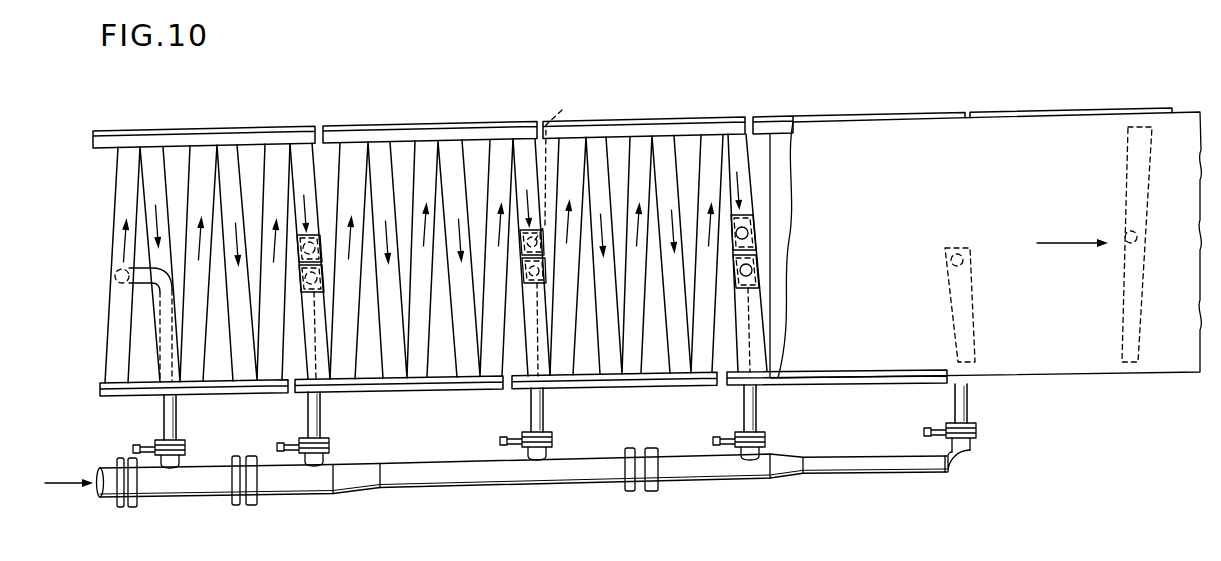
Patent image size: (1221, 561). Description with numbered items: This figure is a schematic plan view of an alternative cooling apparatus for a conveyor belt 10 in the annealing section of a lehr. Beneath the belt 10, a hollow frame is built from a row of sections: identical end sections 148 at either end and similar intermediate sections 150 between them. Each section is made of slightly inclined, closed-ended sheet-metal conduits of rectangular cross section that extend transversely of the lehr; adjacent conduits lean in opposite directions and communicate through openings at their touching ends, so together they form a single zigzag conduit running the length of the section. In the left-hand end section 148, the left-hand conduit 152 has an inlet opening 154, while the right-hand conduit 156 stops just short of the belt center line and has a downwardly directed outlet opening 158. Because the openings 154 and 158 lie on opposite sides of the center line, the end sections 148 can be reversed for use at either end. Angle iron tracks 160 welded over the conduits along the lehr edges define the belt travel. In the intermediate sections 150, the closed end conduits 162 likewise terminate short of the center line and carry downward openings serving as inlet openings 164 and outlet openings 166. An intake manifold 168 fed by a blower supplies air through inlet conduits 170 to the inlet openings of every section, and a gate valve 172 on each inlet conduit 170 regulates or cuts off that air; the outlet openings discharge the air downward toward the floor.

The conveyor belt 10 is at (1178, 108).
The end section 148 is at (225, 130).
The intermediate section 150 is at (430, 126).
The left-hand conduit 152 is at (114, 195).
The inlet opening 154 is at (118, 278).
The right-hand conduit 156 is at (310, 245).
The outlet opening 158 is at (391, 124).
The angle iron track 160 is at (315, 168).
The end conduit 162 is at (520, 172).
The inlet opening 164 is at (314, 280).
The outlet opening 166 is at (805, 217).
The intake manifold 168 is at (588, 474).
The inlet conduit 170 is at (177, 423).
The gate valve 172 is at (142, 441).